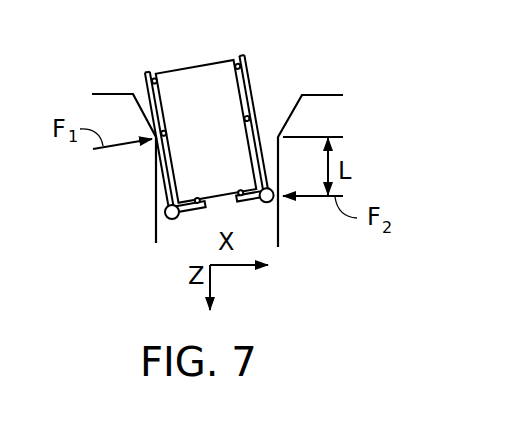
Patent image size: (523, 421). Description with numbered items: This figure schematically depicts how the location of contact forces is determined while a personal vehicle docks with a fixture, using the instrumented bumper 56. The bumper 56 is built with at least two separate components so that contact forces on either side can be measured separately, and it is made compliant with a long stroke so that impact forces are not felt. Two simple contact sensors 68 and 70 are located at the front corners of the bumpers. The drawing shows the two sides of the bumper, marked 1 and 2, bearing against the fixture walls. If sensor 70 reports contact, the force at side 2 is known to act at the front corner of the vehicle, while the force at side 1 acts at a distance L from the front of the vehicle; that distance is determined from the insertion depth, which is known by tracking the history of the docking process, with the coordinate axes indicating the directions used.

The instrumented bumper 56 is at (248, 65).
The first roller 1 is at (171, 219).
The second roller 2 is at (277, 200).
The contact sensor 68 is at (157, 228).
The contact sensor 70 is at (280, 215).